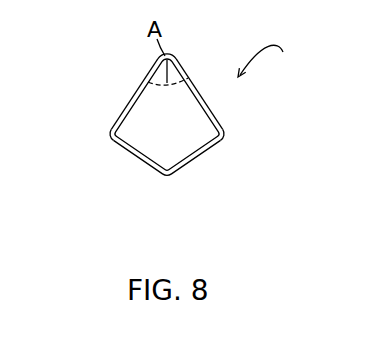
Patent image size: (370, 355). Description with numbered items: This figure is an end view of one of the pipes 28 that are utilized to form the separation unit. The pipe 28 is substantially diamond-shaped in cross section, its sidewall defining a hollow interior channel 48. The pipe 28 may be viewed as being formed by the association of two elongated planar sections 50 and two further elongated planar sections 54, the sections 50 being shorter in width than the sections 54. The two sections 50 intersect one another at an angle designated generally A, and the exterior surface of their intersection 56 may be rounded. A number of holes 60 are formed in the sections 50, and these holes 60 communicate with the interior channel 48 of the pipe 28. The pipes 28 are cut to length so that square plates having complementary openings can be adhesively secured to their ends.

The pipe 28 is at (268, 66).
The channel 48 is at (185, 124).
The elongated planar section 50 is at (189, 163).
The elongated planar section 54 is at (129, 103).
The intersection 56 is at (181, 62).
The hole 60 is at (129, 149).